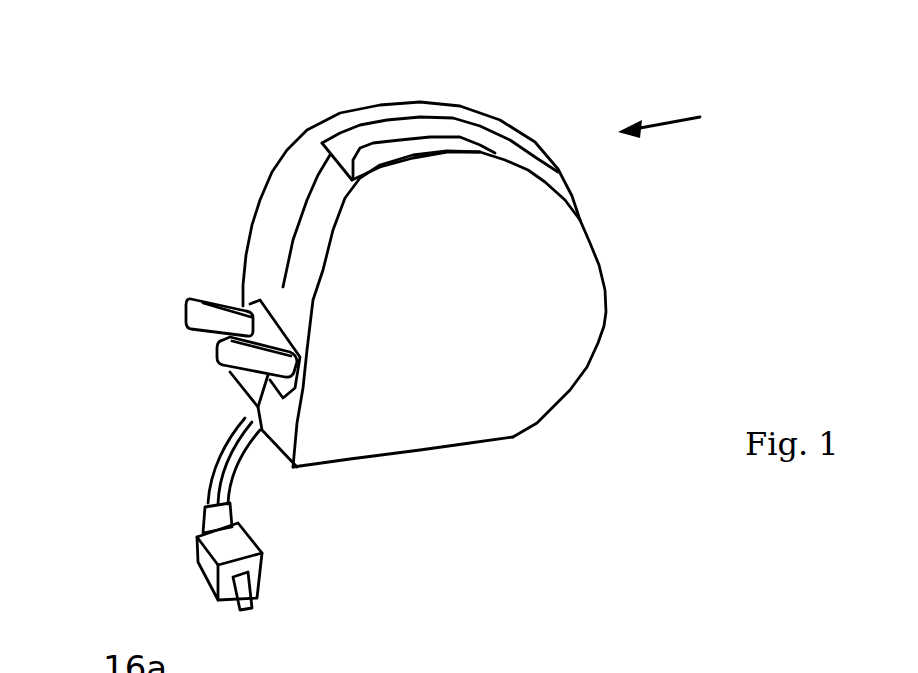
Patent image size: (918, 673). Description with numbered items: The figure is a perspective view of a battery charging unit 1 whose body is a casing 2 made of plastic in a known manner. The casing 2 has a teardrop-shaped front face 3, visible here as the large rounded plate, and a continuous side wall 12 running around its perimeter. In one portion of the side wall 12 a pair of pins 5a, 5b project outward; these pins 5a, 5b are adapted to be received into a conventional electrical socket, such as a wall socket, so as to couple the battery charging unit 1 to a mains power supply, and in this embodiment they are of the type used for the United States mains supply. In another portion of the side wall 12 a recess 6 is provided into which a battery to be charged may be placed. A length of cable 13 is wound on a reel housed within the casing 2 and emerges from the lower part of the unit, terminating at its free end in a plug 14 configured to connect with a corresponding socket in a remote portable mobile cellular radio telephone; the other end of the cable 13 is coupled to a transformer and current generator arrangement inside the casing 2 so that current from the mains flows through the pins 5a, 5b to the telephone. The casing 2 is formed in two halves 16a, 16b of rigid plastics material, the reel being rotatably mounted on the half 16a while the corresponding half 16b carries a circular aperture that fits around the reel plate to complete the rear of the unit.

The battery charging unit 1 is at (468, 72).
The casing 2 is at (497, 309).
The front face 3 is at (457, 383).
The pin 5a is at (166, 382).
The pin 5b is at (168, 277).
The recess 6 is at (473, 124).
The side wall 12 is at (355, 196).
The cable 13 is at (298, 472).
The plug 14 is at (301, 598).
The casing half 16a is at (605, 302).
The casing half 16b is at (435, 98).